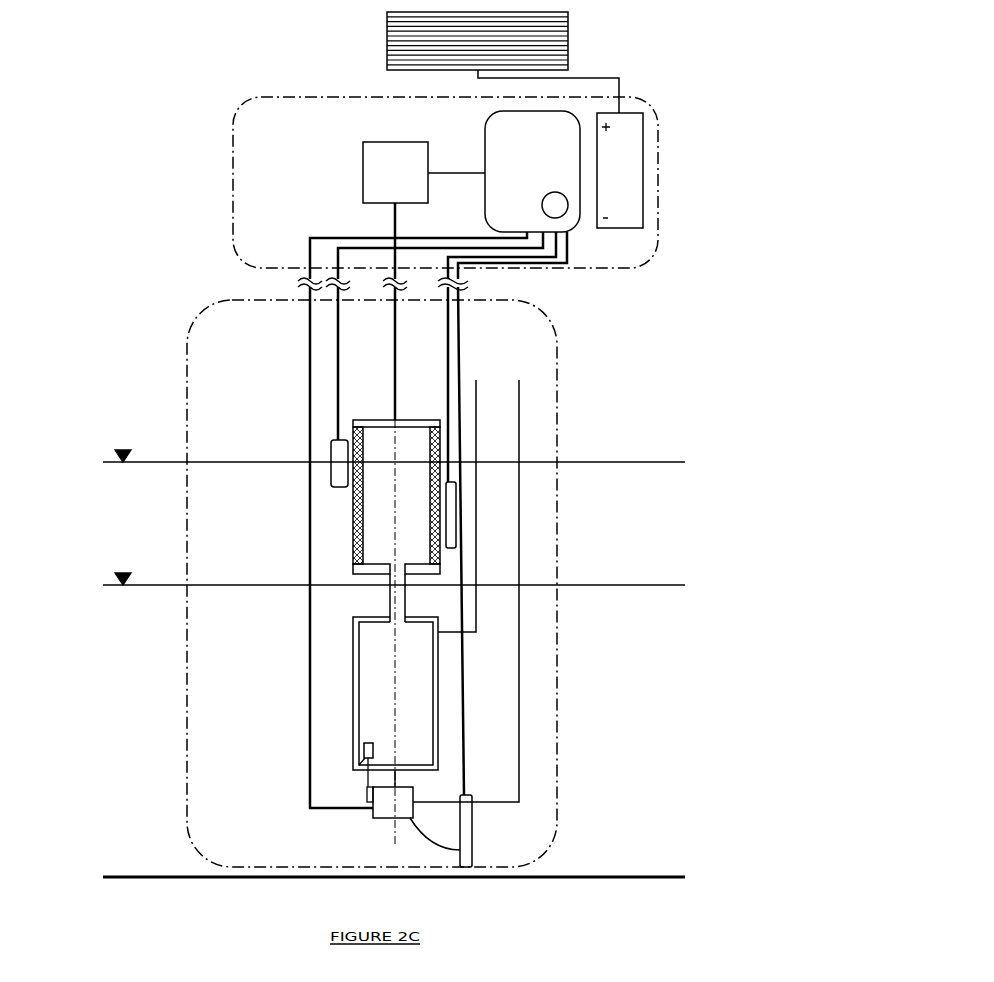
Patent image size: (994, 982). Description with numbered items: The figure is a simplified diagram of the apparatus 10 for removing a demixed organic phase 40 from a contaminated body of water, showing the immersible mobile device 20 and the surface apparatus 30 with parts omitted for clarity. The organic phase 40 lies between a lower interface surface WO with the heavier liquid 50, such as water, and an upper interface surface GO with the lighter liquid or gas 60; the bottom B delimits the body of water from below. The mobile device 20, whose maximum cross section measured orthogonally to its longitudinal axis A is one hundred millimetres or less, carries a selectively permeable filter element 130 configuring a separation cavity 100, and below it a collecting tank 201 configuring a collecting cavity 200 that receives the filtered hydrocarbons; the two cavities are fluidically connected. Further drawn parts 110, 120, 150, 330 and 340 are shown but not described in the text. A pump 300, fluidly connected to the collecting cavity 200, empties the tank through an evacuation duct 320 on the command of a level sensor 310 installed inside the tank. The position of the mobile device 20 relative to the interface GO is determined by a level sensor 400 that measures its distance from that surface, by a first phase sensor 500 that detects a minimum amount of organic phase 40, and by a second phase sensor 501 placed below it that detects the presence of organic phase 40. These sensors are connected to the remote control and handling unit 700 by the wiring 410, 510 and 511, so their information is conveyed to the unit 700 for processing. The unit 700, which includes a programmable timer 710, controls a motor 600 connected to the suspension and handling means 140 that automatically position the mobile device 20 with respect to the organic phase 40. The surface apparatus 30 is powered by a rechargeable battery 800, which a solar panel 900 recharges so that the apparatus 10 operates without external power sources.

The apparatus 10 is at (193, 180).
The mobile device 20 is at (195, 325).
The surface apparatus 30 is at (232, 133).
The demixed organic phase 40 is at (164, 526).
The heavier liquid 50 is at (164, 717).
The lighter liquid or gas 60 is at (160, 358).
The separation cavity 100 is at (332, 606).
The vessel lid 110 is at (390, 418).
The vessel outlet neck 120 is at (389, 582).
The selectively permeable filter element 130 is at (355, 528).
The suspension and handling means 140 is at (393, 368).
The connecting passage 150 is at (406, 603).
The collecting cavity 200 is at (326, 693).
The collecting tank 201 is at (393, 668).
The pump 300 is at (473, 851).
The level sensor 310 is at (367, 775).
The evacuation duct 320 is at (520, 480).
The inner tube 330 is at (477, 557).
The pump cable 340 is at (310, 752).
The level sensor 400 is at (330, 457).
The wiring 410 is at (338, 437).
The first phase sensor 500 is at (457, 485).
The second phase sensor 501 is at (473, 807).
The wiring 510 is at (451, 377).
The wiring 511 is at (463, 712).
The motor 600 is at (362, 167).
The remote control and handling unit 700 is at (485, 145).
The programmable timer 710 is at (556, 219).
The rechargeable battery 800 is at (613, 228).
The solar panel 900 is at (568, 52).
The upper interface surface GO is at (173, 461).
The lower interface surface WO is at (171, 585).
The longitudinal axis A is at (393, 833).
The bottom B is at (169, 875).